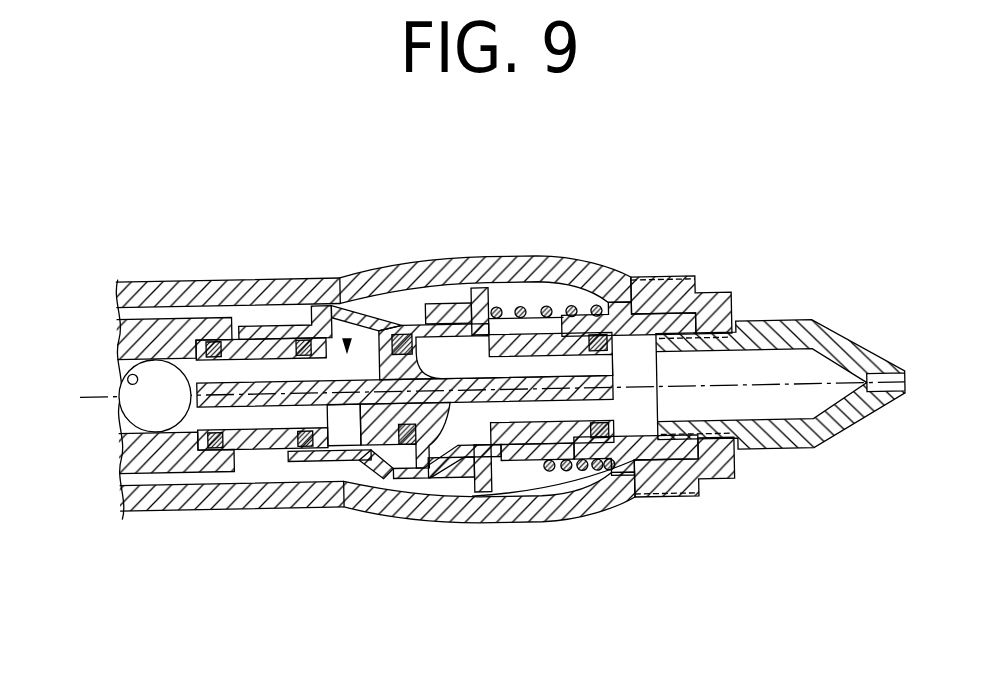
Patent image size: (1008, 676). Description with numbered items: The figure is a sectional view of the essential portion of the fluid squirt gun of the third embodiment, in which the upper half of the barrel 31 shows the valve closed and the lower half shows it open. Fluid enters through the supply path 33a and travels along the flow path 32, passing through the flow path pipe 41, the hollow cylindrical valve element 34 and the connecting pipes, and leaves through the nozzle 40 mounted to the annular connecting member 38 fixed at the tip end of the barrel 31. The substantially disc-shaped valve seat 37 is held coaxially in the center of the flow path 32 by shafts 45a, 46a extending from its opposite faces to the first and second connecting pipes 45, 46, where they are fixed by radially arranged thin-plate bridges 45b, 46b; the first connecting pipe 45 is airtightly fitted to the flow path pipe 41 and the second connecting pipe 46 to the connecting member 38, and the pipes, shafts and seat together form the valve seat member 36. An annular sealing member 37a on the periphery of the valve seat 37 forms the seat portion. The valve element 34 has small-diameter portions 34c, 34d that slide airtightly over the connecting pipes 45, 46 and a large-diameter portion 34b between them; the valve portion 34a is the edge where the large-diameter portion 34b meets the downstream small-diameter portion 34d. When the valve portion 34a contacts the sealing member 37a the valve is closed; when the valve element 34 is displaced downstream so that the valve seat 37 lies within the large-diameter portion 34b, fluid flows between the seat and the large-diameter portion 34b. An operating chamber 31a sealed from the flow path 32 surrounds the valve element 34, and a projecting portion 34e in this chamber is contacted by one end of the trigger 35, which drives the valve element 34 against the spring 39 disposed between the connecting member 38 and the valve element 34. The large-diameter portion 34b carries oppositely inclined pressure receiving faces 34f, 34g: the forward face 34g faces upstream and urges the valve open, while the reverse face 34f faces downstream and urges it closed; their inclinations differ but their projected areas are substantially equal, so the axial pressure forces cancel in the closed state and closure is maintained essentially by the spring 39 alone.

The barrel 31 is at (486, 258).
The operating chamber 31a is at (528, 298).
The flow path 32 is at (348, 340).
The supply path 33a is at (120, 383).
The valve element 34 is at (392, 300).
The valve portion 34a is at (444, 470).
The large-diameter portion 34b is at (385, 470).
The small-diameter portion 34c is at (322, 455).
The small-diameter portion 34d is at (470, 468).
The projecting portion 34e is at (578, 466).
The pressure receiving face 34f is at (322, 327).
The pressure receiving face 34g is at (380, 316).
The trigger 35 is at (528, 462).
The valve seat member 36 is at (258, 452).
The valve seat 37 is at (428, 332).
The sealing member 37a is at (410, 453).
The connecting member 38 is at (738, 306).
The spring 39 is at (626, 472).
The nozzle 40 is at (848, 345).
The flow path pipe 41 is at (155, 452).
The first connecting pipe 45 is at (262, 340).
The shaft 45a is at (213, 341).
The bridges 45b is at (302, 340).
The second connecting pipe 46 is at (598, 300).
The shaft 46a is at (655, 300).
The bridges 46b is at (547, 298).